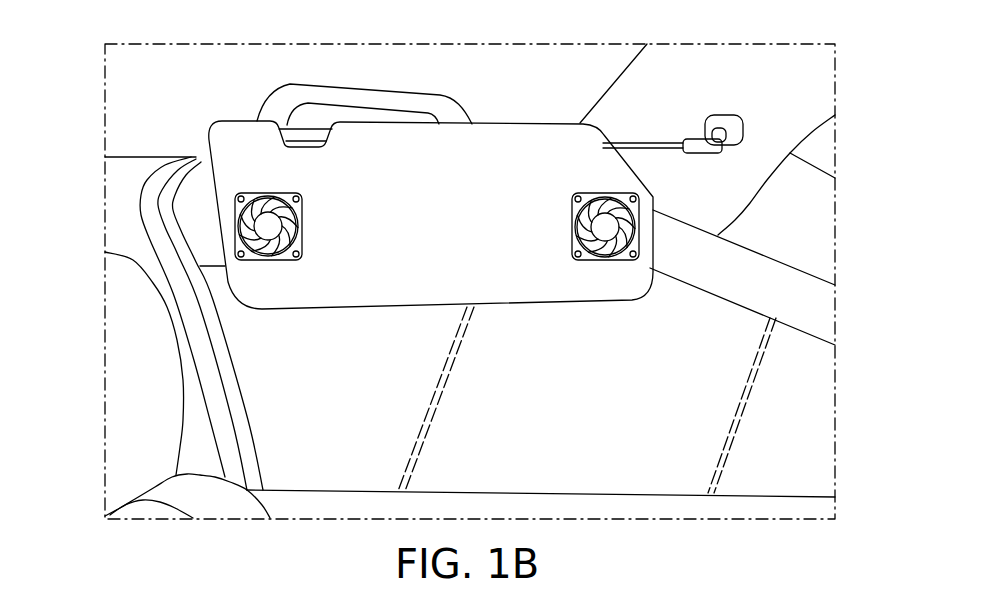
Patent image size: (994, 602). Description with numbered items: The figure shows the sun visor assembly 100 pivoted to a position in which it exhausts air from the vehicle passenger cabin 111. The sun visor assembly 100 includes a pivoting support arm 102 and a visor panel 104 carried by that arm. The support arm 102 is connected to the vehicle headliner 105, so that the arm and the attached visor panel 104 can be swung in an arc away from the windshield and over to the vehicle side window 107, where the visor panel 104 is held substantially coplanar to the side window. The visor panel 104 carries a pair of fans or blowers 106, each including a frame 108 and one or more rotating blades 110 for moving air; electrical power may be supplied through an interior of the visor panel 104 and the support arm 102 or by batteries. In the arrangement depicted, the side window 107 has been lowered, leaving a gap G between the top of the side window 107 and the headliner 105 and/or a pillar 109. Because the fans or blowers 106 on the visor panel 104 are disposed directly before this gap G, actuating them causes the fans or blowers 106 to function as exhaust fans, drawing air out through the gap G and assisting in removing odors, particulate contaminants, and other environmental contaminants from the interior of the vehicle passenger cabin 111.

The sun visor assembly 100 is at (183, 119).
The pivoting support arm 102 is at (650, 143).
The visor panel 104 is at (484, 230).
The vehicle headliner 105 is at (542, 92).
The fans or blowers 106 is at (318, 221).
The vehicle side window 107 is at (706, 397).
The frame 108 is at (298, 192).
The pillar 109 is at (807, 215).
The rotating blades 110 is at (276, 230).
The vehicle passenger cabin 111 is at (140, 373).
The gap G is at (751, 285).